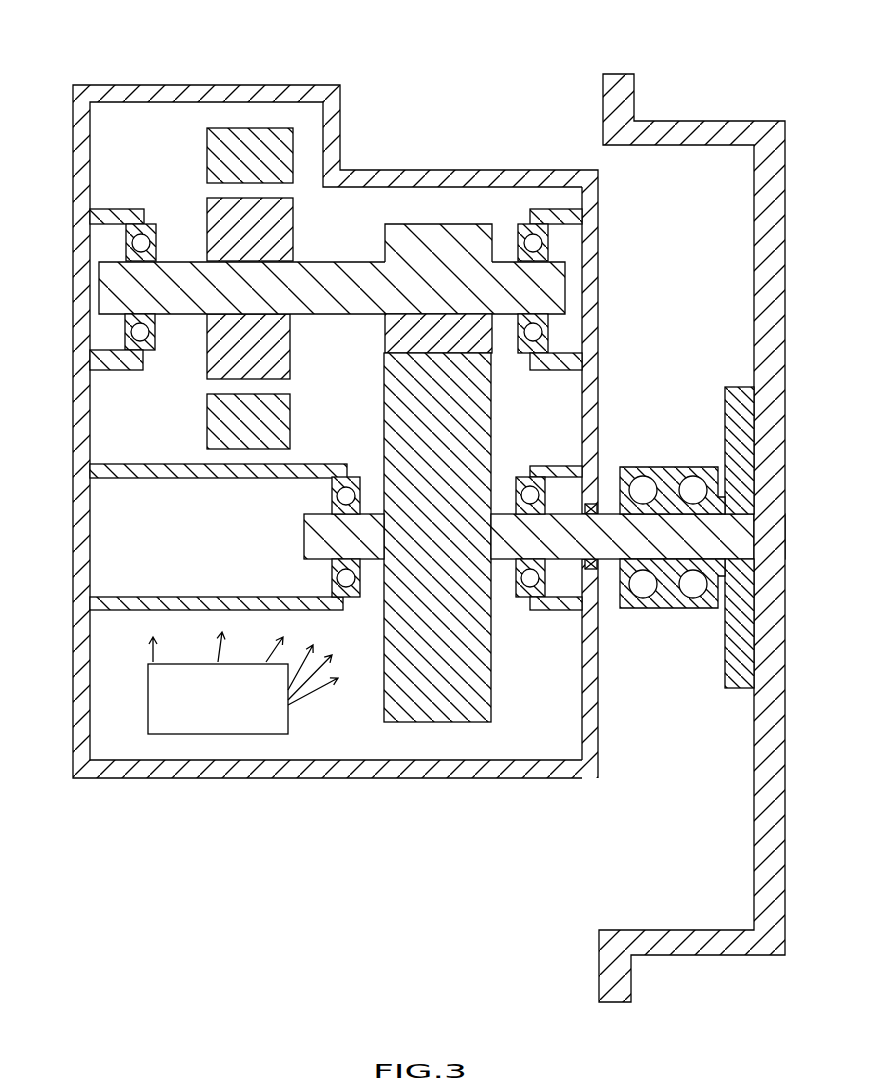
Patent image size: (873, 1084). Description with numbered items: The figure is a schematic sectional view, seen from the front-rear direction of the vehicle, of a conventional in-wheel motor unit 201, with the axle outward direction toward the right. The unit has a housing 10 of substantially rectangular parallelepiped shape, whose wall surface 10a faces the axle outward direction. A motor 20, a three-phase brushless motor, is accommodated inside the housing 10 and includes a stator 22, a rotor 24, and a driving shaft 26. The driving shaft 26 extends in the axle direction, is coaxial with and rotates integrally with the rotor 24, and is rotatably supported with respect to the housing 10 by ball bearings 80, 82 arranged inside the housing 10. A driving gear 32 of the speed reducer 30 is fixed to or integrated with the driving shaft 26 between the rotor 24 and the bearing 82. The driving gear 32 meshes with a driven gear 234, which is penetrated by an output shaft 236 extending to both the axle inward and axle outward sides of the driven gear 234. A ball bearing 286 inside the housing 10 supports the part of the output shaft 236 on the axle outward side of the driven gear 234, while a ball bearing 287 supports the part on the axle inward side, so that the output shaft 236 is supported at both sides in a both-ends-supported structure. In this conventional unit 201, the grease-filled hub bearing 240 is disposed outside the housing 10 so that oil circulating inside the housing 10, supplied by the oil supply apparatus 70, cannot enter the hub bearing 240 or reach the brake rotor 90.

The motor unit 201 is at (426, 506).
The housing 10 is at (343, 427).
The wall surface 10a is at (600, 258).
The motor 20 is at (332, 230).
The stator 22 is at (262, 140).
The rotor 24 is at (278, 222).
The driving shaft 26 is at (341, 280).
The speed reducer 30 is at (508, 422).
The driving gear 32 is at (466, 238).
The ball bearing 80 is at (143, 225).
The ball bearing 82 is at (578, 221).
The brake rotor 90 is at (777, 240).
The driven gear 234 is at (415, 398).
The output shaft 236 is at (340, 538).
The hub bearing 240 is at (670, 636).
The ball bearing 286 is at (522, 594).
The ball bearing 287 is at (354, 598).
The oil supply apparatus 70 is at (217, 724).